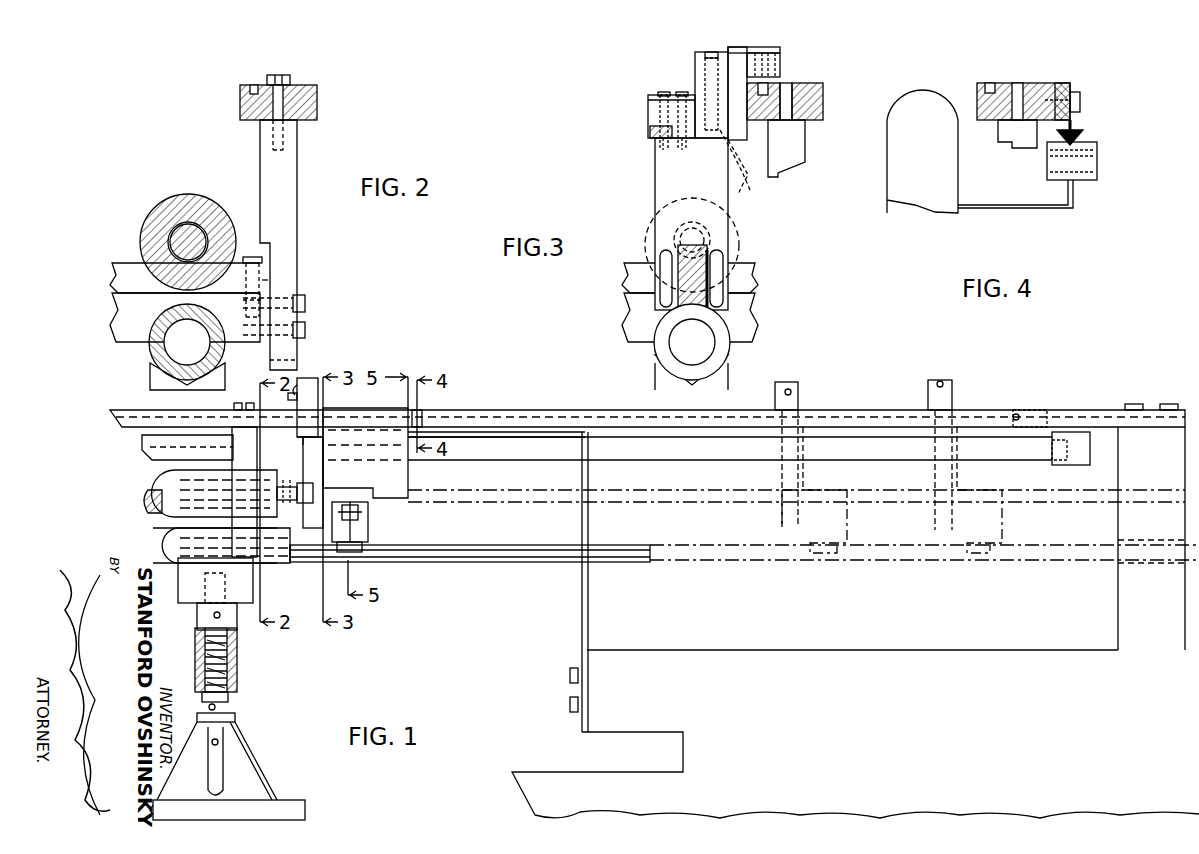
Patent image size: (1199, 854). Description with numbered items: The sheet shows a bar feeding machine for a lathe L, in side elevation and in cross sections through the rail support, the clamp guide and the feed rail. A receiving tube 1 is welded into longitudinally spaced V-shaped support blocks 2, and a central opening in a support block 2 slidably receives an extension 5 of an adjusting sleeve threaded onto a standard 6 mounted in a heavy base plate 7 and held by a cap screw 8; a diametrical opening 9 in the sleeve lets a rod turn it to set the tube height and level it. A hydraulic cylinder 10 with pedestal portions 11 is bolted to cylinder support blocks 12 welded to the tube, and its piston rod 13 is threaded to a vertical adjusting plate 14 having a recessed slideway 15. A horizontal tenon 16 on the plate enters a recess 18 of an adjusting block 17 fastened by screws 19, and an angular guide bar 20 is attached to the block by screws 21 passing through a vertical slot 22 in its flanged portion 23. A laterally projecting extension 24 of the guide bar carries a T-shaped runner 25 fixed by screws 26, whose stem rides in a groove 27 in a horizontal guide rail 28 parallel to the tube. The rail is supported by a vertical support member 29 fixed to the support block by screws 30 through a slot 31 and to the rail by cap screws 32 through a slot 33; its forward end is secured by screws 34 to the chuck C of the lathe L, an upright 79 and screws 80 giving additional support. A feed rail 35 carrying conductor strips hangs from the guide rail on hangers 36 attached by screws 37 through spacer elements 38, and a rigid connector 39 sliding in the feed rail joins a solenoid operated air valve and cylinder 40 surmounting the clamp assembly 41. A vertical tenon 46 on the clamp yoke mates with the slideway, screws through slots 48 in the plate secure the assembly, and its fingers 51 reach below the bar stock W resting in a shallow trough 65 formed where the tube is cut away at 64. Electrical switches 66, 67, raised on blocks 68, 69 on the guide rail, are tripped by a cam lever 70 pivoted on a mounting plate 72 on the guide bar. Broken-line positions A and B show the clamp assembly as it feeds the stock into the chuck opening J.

In FIG. 2, the receiving tube 1 is at (156, 350).
In FIG. 3, the receiving tube 1 is at (654, 348).
In FIG. 1, the receiving tube 1 is at (168, 540).
In FIG. 2, the support blocks 2 is at (150, 383).
In FIG. 3, the support blocks 2 is at (655, 380).
In FIG. 1, the support blocks 2 is at (188, 580).
In FIG. 1, the extension 5 is at (195, 610).
In FIG. 1, the standard 6 is at (235, 684).
In FIG. 1, the base plate 7 is at (255, 782).
In FIG. 1, the cap screw 8 is at (220, 742).
In FIG. 1, the diametrical opening 9 is at (232, 630).
In FIG. 2, the hydraulic cylinder 10 is at (141, 238).
In FIG. 3, the hydraulic cylinder 10 is at (645, 240).
In FIG. 1, the hydraulic cylinder 10 is at (160, 485).
In FIG. 2, the pedestal portions 11 is at (124, 272).
In FIG. 3, the pedestal portions 11 is at (640, 275).
In FIG. 1, the pedestal portions 11 is at (148, 500).
In FIG. 2, the cylinder support blocks 12 is at (130, 315).
In FIG. 3, the cylinder support blocks 12 is at (640, 328).
In FIG. 1, the cylinder support blocks 12 is at (170, 520).
In FIG. 2, the piston rod 13 is at (188, 230).
In FIG. 3, the piston rod 13 is at (710, 240).
In FIG. 1, the piston rod 13 is at (292, 490).
In FIG. 3, the adjusting plate 14 is at (670, 177).
In FIG. 1, the adjusting plate 14 is at (313, 528).
In FIG. 3, the recessed slideway 15 is at (728, 322).
In FIG. 3, the tongue or tenon 16 is at (660, 140).
In FIG. 1, the tongue or tenon 16 is at (305, 440).
In FIG. 3, the adjusting block 17 is at (648, 108).
In FIG. 1, the adjusting block 17 is at (318, 404).
In FIG. 3, the recess 18 is at (650, 134).
In FIG. 3, the screws 19 is at (664, 100).
In FIG. 3, the angular guide bar 20 is at (740, 140).
In FIG. 3, the screws 21 is at (700, 70).
In FIG. 3, the vertical slot 22 is at (690, 95).
In FIG. 3, the flanged portion 23 is at (745, 163).
In FIG. 1, the flanged portion 23 is at (298, 425).
In FIG. 3, the laterally projecting extension 24 is at (780, 63).
In FIG. 3, the T-shaped runner 25 is at (780, 75).
In FIG. 3, the screws 26 is at (780, 50).
In FIG. 2, the groove 27 is at (254, 86).
In FIG. 3, the groove 27 is at (760, 120).
In FIG. 4, the groove 27 is at (990, 83).
In FIG. 1, the groove 27 is at (545, 412).
In FIG. 2, the guide rail 28 is at (317, 92).
In FIG. 3, the guide rail 28 is at (823, 98).
In FIG. 4, the guide rail 28 is at (985, 120).
In FIG. 1, the guide rail 28 is at (112, 419).
In FIG. 2, the vertical support member 29 is at (297, 223).
In FIG. 3, the vertical support member 29 is at (796, 160).
In FIG. 4, the vertical support member 29 is at (1014, 140).
In FIG. 1, the vertical support member 29 is at (150, 441).
In FIG. 2, the screws 30 is at (305, 330).
In FIG. 2, the slot 31 is at (278, 284).
In FIG. 2, the cap screws 32 is at (280, 75).
In FIG. 1, the cap screws 32 is at (250, 403).
In FIG. 2, the slot 33 is at (280, 118).
In FIG. 3, the slot 33 is at (790, 120).
In FIG. 4, the slot 33 is at (1018, 83).
In FIG. 1, the slot 33 is at (475, 412).
In FIG. 1, the screws 34 is at (1169, 404).
In FIG. 4, the feed rail 35 is at (1084, 137).
In FIG. 1, the feed rail 35 is at (730, 450).
In FIG. 4, the hangers 36 is at (1074, 122).
In FIG. 1, the hangers 36 is at (420, 415).
In FIG. 4, the screws 37 is at (1080, 98).
In FIG. 1, the screws 37 is at (1020, 410).
In FIG. 4, the spacer elements 38 is at (1065, 83).
In FIG. 4, the rigid connector 39 is at (1045, 208).
In FIG. 4, the solenoid operated air valve and cylinder 40 is at (902, 180).
In FIG. 1, the solenoid operated air valve and cylinder 40 is at (400, 497).
In FIG. 1, the clamp assembly 41 is at (368, 515).
In FIG. 3, the tongue or tenon 46 is at (708, 270).
In FIG. 3, the slots 48 is at (660, 296).
In FIG. 1, the fingers 51 is at (362, 546).
In FIG. 1, the cut-away portion 64 is at (288, 560).
In FIG. 3, the shallow trough 65 is at (726, 364).
In FIG. 1, the shallow trough 65 is at (470, 563).
In FIG. 1, the sensitive electrical switch 66 is at (795, 388).
In FIG. 1, the sensitive electrical switch 67 is at (950, 384).
In FIG. 1, the block 68 is at (795, 404).
In FIG. 1, the block 69 is at (934, 392).
In FIG. 1, the cam lever 70 is at (298, 388).
In FIG. 3, the angle bracket or mounting plate 72 is at (722, 52).
In FIG. 1, the angle bracket or mounting plate 72 is at (312, 382).
In FIG. 1, the upright 79 is at (580, 618).
In FIG. 1, the screws 80 is at (570, 438).
In FIG. 1, the position A is at (980, 535).
In FIG. 1, the position B is at (823, 530).
In FIG. 1, the chuck C is at (1130, 620).
In FIG. 1, the chuck opening J is at (1157, 543).
In FIG. 1, the lathe L is at (735, 660).
In FIG. 1, the bar stock W is at (630, 560).